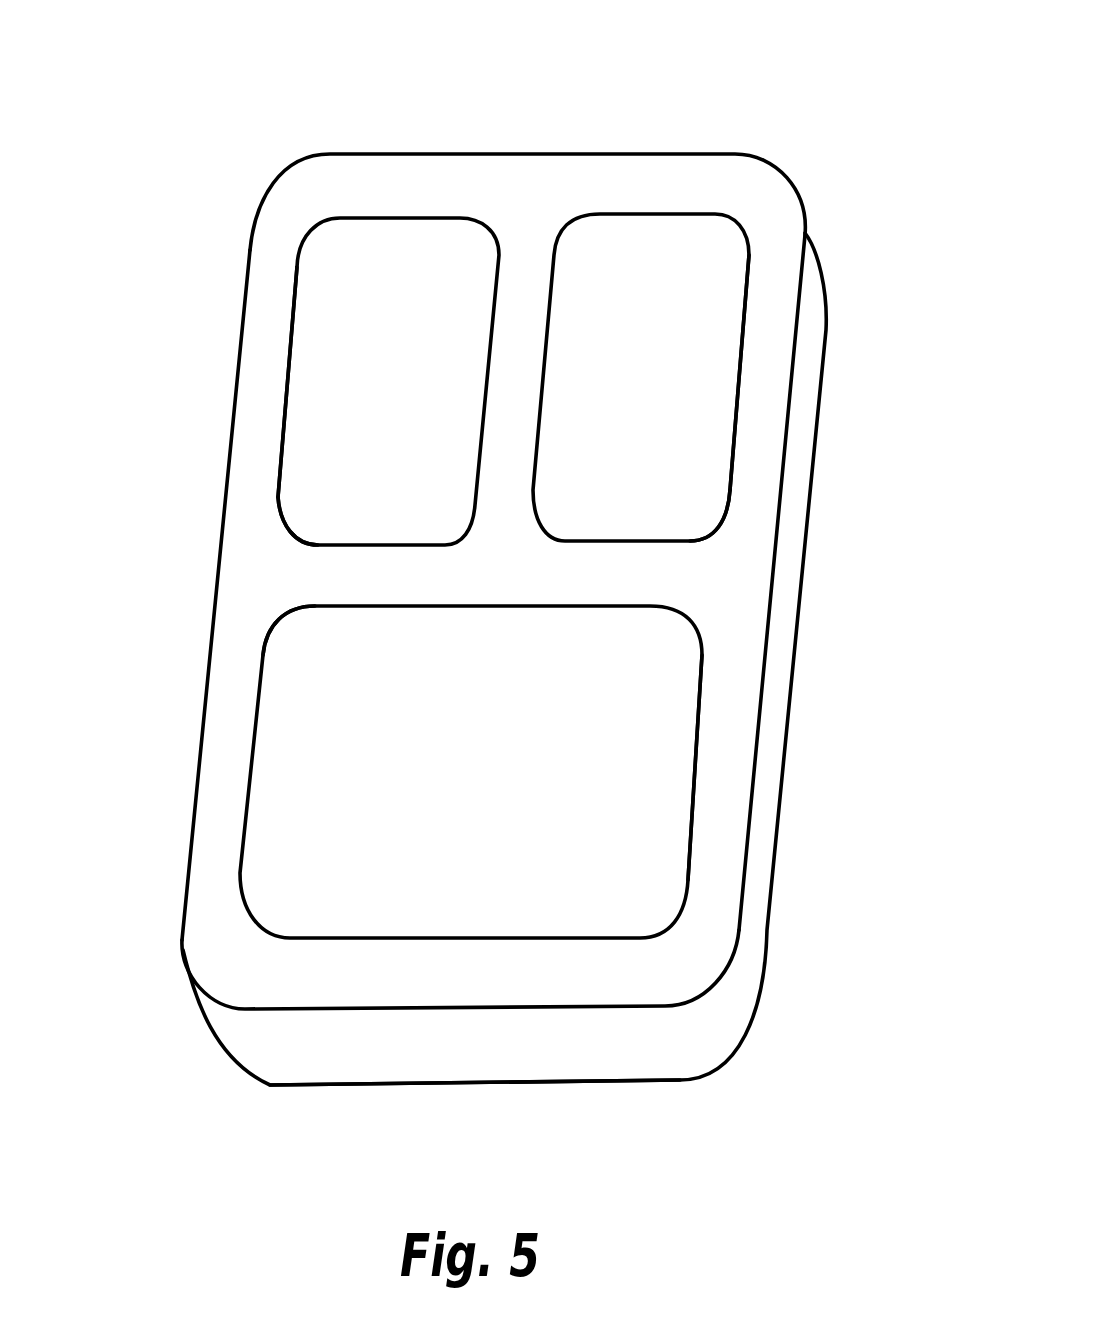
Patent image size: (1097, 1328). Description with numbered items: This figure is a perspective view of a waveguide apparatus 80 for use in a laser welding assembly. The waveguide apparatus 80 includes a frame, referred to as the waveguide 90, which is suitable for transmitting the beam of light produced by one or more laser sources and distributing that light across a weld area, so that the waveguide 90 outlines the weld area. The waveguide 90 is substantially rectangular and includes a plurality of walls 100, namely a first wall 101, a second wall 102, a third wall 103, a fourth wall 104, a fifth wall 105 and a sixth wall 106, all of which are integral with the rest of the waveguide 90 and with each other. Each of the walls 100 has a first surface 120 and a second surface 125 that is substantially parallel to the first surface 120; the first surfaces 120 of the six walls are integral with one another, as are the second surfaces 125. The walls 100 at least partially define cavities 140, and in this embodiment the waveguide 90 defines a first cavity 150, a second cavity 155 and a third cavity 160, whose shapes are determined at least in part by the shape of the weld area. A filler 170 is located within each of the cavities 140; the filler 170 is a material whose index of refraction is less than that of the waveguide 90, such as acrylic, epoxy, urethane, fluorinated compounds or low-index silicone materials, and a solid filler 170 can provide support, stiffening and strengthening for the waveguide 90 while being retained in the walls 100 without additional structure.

The waveguide apparatus 80 is at (506, 585).
The waveguide 90 is at (504, 688).
The walls 100 is at (499, 615).
The first wall 101 is at (400, 180).
The second wall 102 is at (742, 722).
The third wall 103 is at (433, 980).
The fourth wall 104 is at (207, 820).
The fifth wall 105 is at (525, 283).
The sixth wall 106 is at (547, 565).
The first surface 120 is at (412, 593).
The second surface 125 is at (553, 1087).
The cavity 140 is at (313, 547).
The first cavity 150 is at (280, 473).
The second cavity 155 is at (735, 415).
The third cavity 160 is at (690, 818).
The filler 170 is at (413, 407).